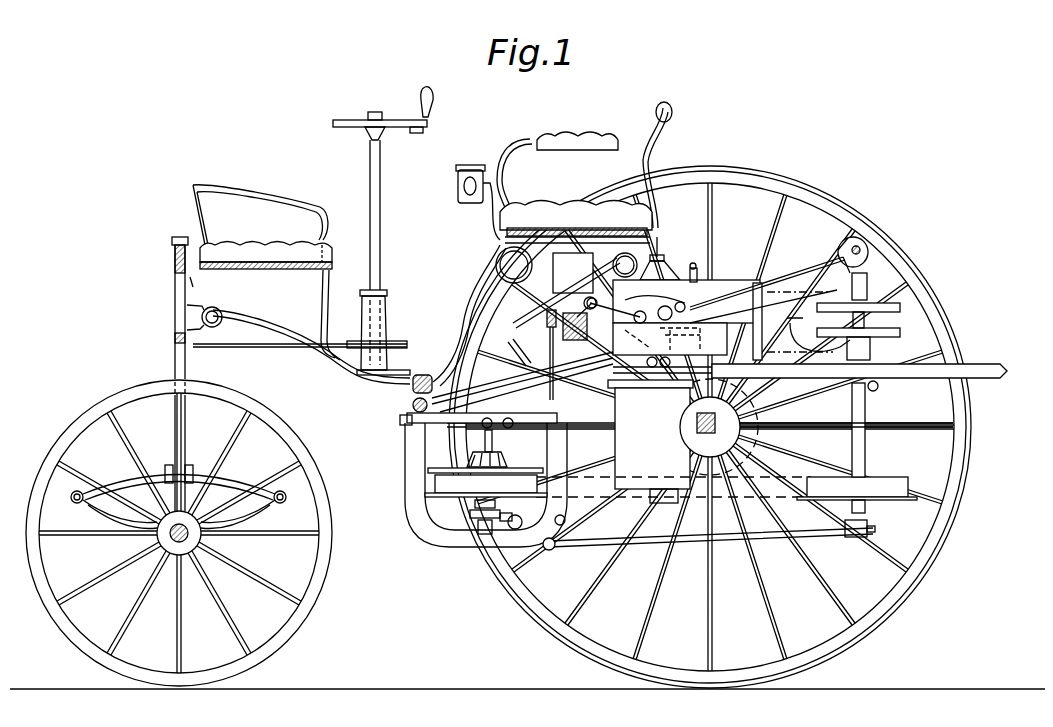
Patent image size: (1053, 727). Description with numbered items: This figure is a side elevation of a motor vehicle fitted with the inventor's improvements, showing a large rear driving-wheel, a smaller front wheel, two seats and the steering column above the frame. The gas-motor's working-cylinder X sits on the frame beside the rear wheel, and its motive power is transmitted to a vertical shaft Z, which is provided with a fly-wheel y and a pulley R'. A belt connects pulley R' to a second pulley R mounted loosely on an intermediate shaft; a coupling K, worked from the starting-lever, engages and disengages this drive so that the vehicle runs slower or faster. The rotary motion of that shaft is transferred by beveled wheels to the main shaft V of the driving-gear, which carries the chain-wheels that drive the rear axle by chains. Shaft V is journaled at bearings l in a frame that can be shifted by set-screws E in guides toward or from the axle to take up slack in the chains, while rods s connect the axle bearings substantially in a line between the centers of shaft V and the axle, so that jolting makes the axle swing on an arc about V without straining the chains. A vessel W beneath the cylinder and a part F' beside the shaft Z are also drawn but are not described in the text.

The working-cylinder X is at (673, 315).
The water reservoir W is at (650, 441).
The pulley R is at (486, 482).
The pulley R' is at (857, 488).
The main shaft V is at (490, 448).
The coupling K is at (496, 409).
The rods s is at (600, 428).
The set-screws E is at (405, 423).
The fly-wheel y is at (859, 360).
The vertical shaft Z is at (870, 429).
The countershaft F' is at (846, 416).
The journals l is at (580, 316).